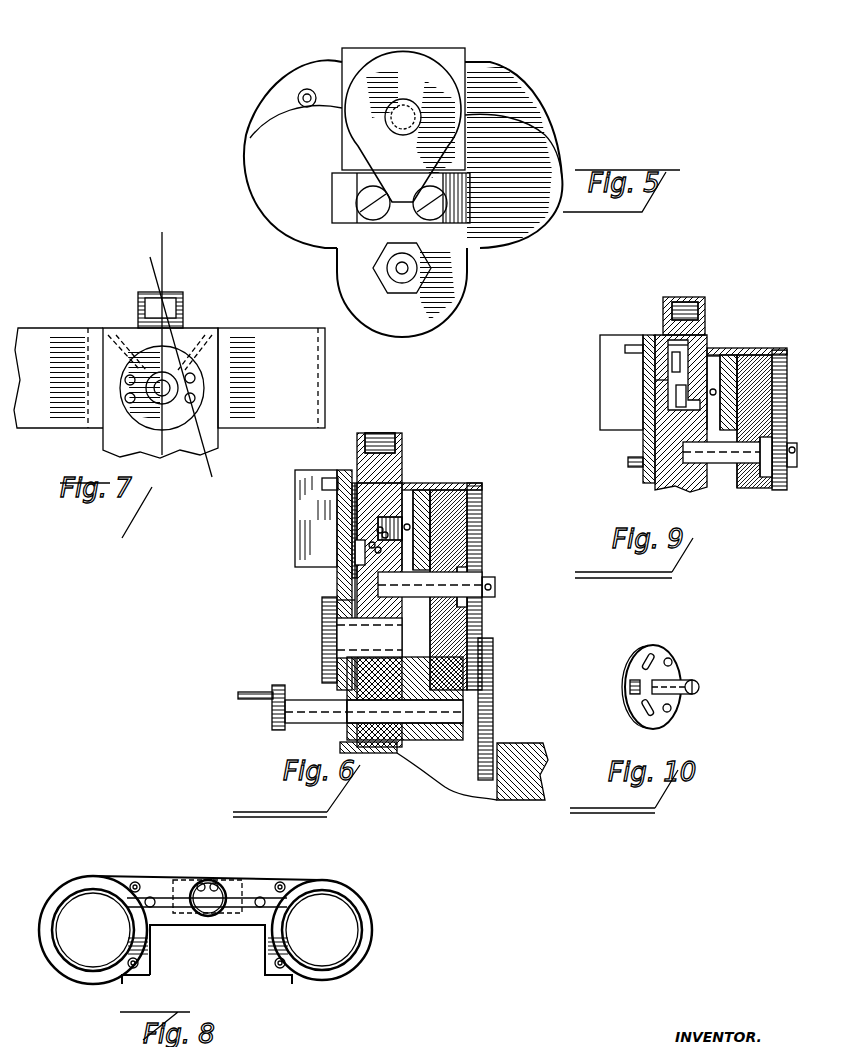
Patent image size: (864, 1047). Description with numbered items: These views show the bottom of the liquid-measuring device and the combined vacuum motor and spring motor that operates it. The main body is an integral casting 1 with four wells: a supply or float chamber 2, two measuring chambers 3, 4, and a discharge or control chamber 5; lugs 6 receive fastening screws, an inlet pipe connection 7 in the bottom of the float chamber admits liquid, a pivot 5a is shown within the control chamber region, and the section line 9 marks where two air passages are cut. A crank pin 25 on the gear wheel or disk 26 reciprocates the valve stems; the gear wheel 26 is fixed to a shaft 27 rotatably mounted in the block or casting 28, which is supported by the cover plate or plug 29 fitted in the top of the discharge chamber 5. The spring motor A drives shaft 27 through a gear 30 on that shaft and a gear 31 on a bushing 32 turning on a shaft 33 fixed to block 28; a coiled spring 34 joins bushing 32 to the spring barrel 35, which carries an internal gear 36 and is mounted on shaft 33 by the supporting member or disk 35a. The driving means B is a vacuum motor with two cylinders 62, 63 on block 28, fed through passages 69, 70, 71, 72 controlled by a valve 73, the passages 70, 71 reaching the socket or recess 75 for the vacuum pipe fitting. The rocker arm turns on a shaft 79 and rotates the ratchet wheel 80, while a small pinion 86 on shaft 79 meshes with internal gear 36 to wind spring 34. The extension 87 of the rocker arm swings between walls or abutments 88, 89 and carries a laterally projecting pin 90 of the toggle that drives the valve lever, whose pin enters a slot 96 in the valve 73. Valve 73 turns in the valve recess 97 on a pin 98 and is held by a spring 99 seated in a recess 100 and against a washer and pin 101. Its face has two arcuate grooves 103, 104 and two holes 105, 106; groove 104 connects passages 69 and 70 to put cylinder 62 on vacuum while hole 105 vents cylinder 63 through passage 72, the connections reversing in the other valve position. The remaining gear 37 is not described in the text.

In FIG. 5, the casting 1 is at (530, 126).
In FIG. 5, the supply or float chamber 2 is at (398, 323).
In FIG. 5, the measuring chamber 3 is at (532, 217).
In FIG. 5, the measuring chamber 4 is at (273, 215).
In FIG. 5, the discharge or control chamber 5 is at (443, 100).
In FIG. 5, the cam pivot 5a is at (403, 117).
In FIG. 5, the lugs 6 is at (403, 48).
In FIG. 7, the lugs 6 is at (162, 344).
In FIG. 5, the inlet pipe connection 7 is at (403, 268).
In FIG. 7, the section line 9 is at (181, 371).
In FIG. 6, the crank pin 25 is at (238, 696).
In FIG. 6, the gear wheel or disk 26 is at (275, 718).
In FIG. 6, the shaft 27 is at (300, 705).
In FIG. 7, the block or casting 28 is at (115, 445).
In FIG. 6, the block or casting 28 is at (368, 605).
In FIG. 9, the block or casting 28 is at (675, 480).
In FIG. 8, the block or casting 28 is at (255, 882).
In FIG. 6, the cover plate or plug 29 is at (500, 785).
In FIG. 6, the gear 30 is at (468, 745).
In FIG. 6, the gear 31 is at (478, 502).
In FIG. 9, the gear 31 is at (778, 490).
In FIG. 6, the bushing 32 is at (465, 590).
In FIG. 9, the bushing 32 is at (765, 455).
In FIG. 6, the shaft 33 is at (470, 560).
In FIG. 9, the shaft 33 is at (698, 450).
In FIG. 6, the coiled spring 34 is at (470, 490).
In FIG. 9, the coiled spring 34 is at (760, 353).
In FIG. 6, the spring barrel 35 is at (448, 490).
In FIG. 9, the spring barrel 35 is at (742, 350).
In FIG. 6, the supporting member or disk 35a is at (440, 487).
In FIG. 9, the supporting member or disk 35a is at (745, 345).
In FIG. 6, the internal gear 36 is at (422, 490).
In FIG. 9, the internal gear 36 is at (730, 352).
In FIG. 6, the gear 37 is at (488, 660).
In FIG. 7, the cylinder 62 is at (50, 335).
In FIG. 6, the cylinder 62 is at (310, 505).
In FIG. 8, the cylinder 62 is at (68, 947).
In FIG. 7, the cylinder 63 is at (290, 345).
In FIG. 8, the cylinder 63 is at (345, 938).
In FIG. 7, the passage 69 is at (130, 347).
In FIG. 9, the passage 69 is at (676, 352).
In FIG. 8, the passage 69 is at (135, 883).
In FIG. 7, the passage 70 is at (140, 350).
In FIG. 8, the passage 70 is at (178, 882).
In FIG. 7, the passage 71 is at (185, 345).
In FIG. 9, the passage 71 is at (714, 356).
In FIG. 8, the passage 71 is at (232, 882).
In FIG. 7, the passage 72 is at (215, 345).
In FIG. 8, the passage 72 is at (285, 900).
In FIG. 6, the valve 73 is at (353, 480).
In FIG. 9, the valve 73 is at (660, 348).
In FIG. 10, the valve 73 is at (678, 673).
In FIG. 7, the socket or recess 75 is at (167, 313).
In FIG. 6, the socket or recess 75 is at (380, 440).
In FIG. 9, the socket or recess 75 is at (683, 305).
In FIG. 8, the socket or recess 75 is at (208, 900).
In FIG. 6, the shaft 79 is at (345, 680).
In FIG. 6, the ratchet wheel 80 is at (330, 640).
In FIG. 9, the ratchet wheel 80 is at (630, 462).
In FIG. 6, the small gear wheel or pinion 86 is at (369, 638).
In FIG. 6, the extension or projecting arm 87 is at (338, 598).
In FIG. 9, the extension or projecting arm 87 is at (656, 380).
In FIG. 8, the wall or abutment 88 is at (263, 945).
In FIG. 8, the wall or abutment 89 is at (152, 945).
In FIG. 6, the laterally projecting pin 90 is at (330, 482).
In FIG. 9, the laterally projecting pin 90 is at (625, 349).
In FIG. 10, the slot 96 is at (630, 688).
In FIG. 8, the valve recess 97 is at (232, 920).
In FIG. 6, the pin 98 is at (372, 534).
In FIG. 10, the pin 98 is at (699, 686).
In FIG. 6, the spring 99 is at (378, 538).
In FIG. 6, the recess 100 is at (372, 550).
In FIG. 6, the washer and pin 101 is at (400, 480).
In FIG. 9, the arcuate groove or recess 103 is at (668, 418).
In FIG. 10, the arcuate groove or recess 103 is at (648, 655).
In FIG. 6, the arcuate groove or recess 104 is at (365, 545).
In FIG. 10, the arcuate groove or recess 104 is at (641, 720).
In FIG. 9, the hole or opening 105 is at (674, 382).
In FIG. 10, the hole or opening 105 is at (672, 660).
In FIG. 6, the hole or opening 106 is at (382, 528).
In FIG. 10, the hole or opening 106 is at (670, 711).
In FIG. 6, the spring motor A is at (502, 593).
In FIG. 6, the driving means B is at (325, 571).
In FIG. 9, the driving means B is at (648, 401).